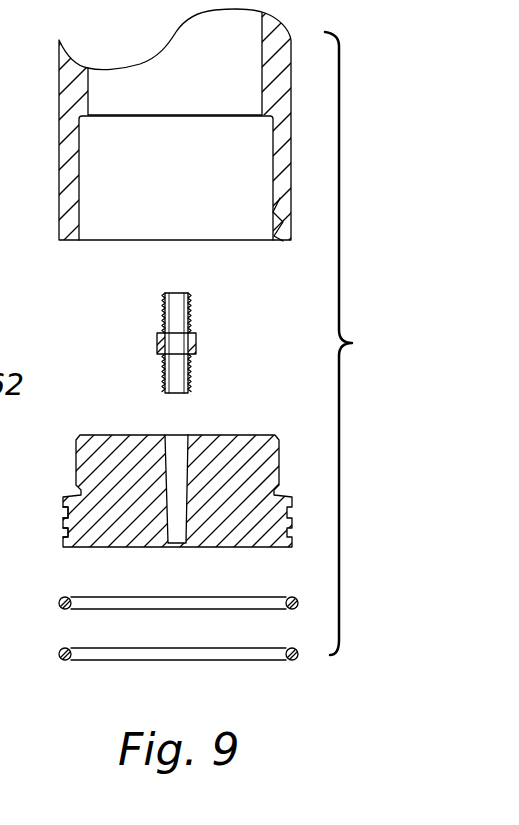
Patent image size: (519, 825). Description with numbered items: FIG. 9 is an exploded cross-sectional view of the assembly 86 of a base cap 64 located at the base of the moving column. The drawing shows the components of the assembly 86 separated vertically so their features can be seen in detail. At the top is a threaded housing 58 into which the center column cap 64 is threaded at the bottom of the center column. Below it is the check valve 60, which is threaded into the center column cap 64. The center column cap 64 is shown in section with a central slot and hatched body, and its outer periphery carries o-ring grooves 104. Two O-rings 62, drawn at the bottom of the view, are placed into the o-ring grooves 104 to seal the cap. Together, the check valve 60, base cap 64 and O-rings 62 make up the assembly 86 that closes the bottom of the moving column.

The cylinder housing 58 is at (280, 196).
The check valve 60 is at (157, 338).
The O-rings 62 is at (60, 655).
The center column cap 64 is at (253, 435).
The assembly 86 is at (366, 343).
The o-ring grooves 104 is at (62, 508).